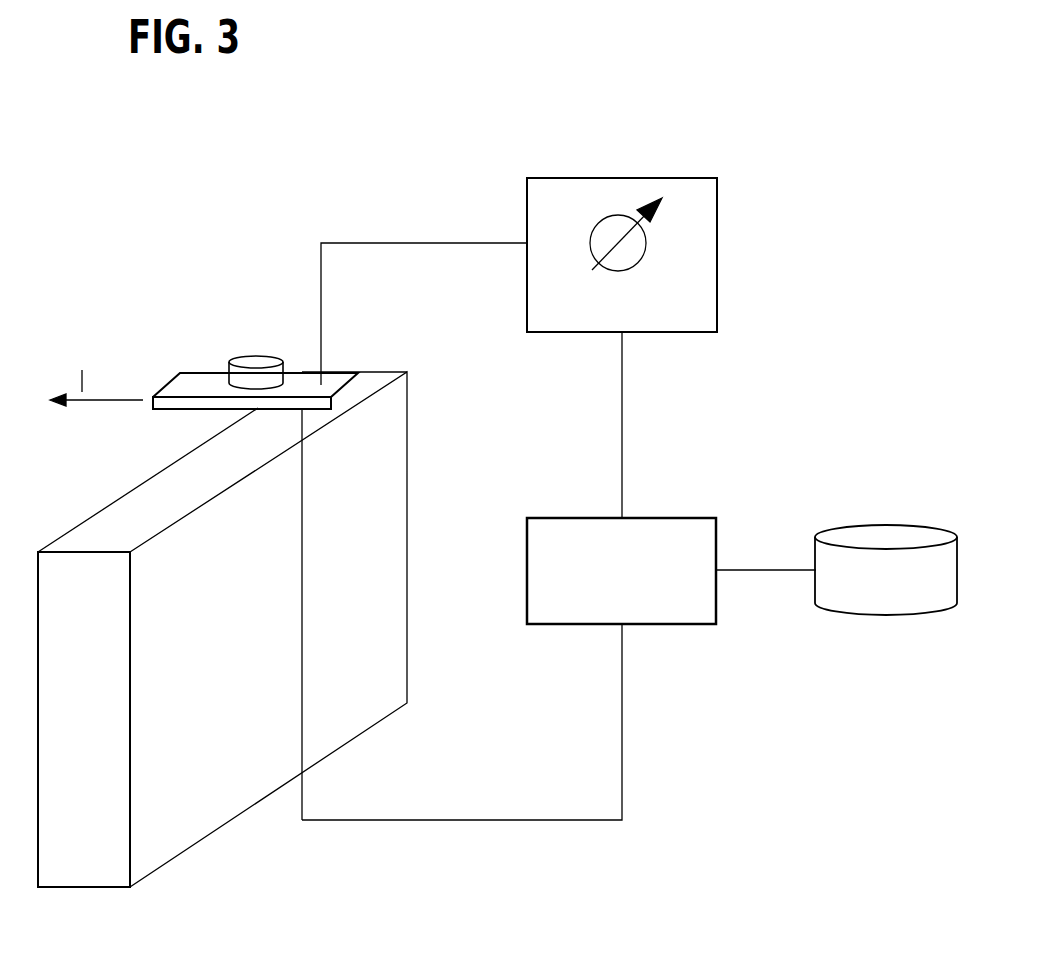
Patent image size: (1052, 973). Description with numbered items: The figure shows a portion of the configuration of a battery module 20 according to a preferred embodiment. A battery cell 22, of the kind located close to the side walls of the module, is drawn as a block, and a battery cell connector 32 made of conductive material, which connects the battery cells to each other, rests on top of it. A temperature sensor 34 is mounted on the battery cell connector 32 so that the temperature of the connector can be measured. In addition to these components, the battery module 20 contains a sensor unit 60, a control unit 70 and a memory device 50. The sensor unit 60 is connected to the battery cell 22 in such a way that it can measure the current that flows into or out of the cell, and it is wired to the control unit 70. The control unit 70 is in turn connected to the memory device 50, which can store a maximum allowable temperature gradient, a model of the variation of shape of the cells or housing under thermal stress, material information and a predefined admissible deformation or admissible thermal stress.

The battery module 20 is at (835, 163).
The battery cell 22 is at (192, 825).
The battery cell connector 32 is at (197, 375).
The temperature sensor 34 is at (256, 365).
The memory device 50 is at (883, 538).
The sensor unit 60 is at (717, 246).
The control unit 70 is at (668, 535).